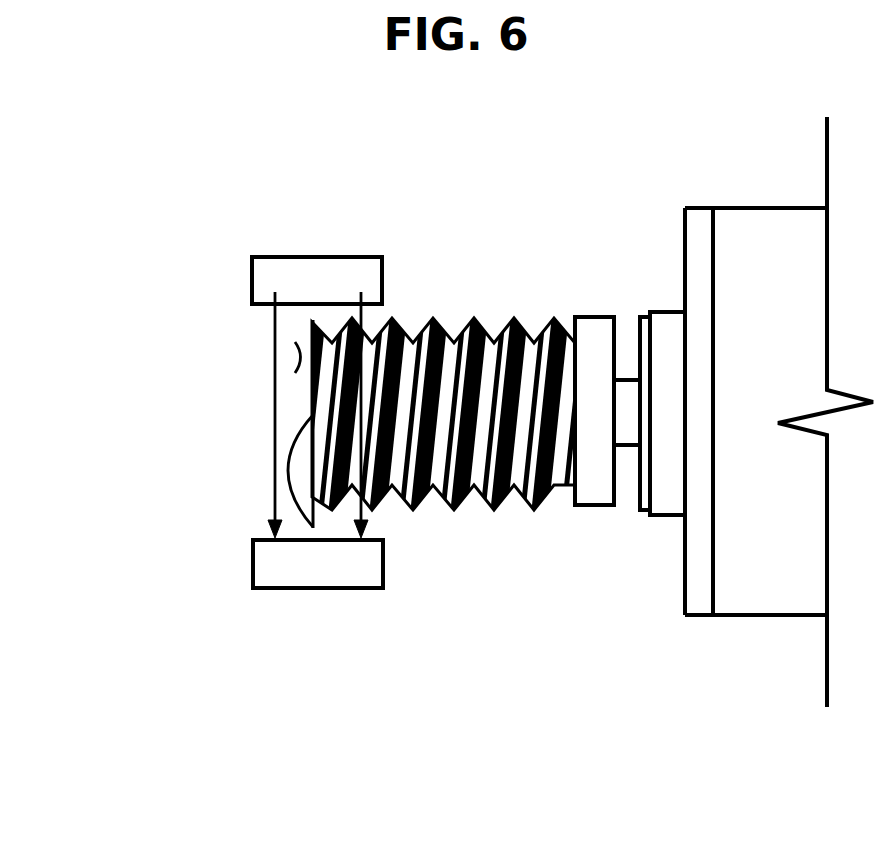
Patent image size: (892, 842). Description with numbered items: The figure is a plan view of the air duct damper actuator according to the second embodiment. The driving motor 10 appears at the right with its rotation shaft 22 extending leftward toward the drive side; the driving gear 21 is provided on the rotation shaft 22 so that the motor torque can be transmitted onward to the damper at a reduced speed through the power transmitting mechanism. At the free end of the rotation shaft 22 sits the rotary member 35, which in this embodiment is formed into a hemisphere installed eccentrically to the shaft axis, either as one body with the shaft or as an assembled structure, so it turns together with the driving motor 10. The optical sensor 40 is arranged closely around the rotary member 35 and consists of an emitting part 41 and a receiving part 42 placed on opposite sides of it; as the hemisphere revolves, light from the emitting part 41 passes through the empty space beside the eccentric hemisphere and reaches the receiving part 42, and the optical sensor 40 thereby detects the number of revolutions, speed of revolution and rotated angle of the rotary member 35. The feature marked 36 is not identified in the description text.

The driving motor 10 is at (778, 597).
The driving gear 21 is at (477, 328).
The rotation shaft 22 is at (628, 390).
The rotary member 35 is at (288, 470).
The detection gap 36 is at (298, 357).
The optical sensor 40 is at (113, 282).
The emitting part 41 is at (252, 280).
The receiving part 42 is at (256, 562).